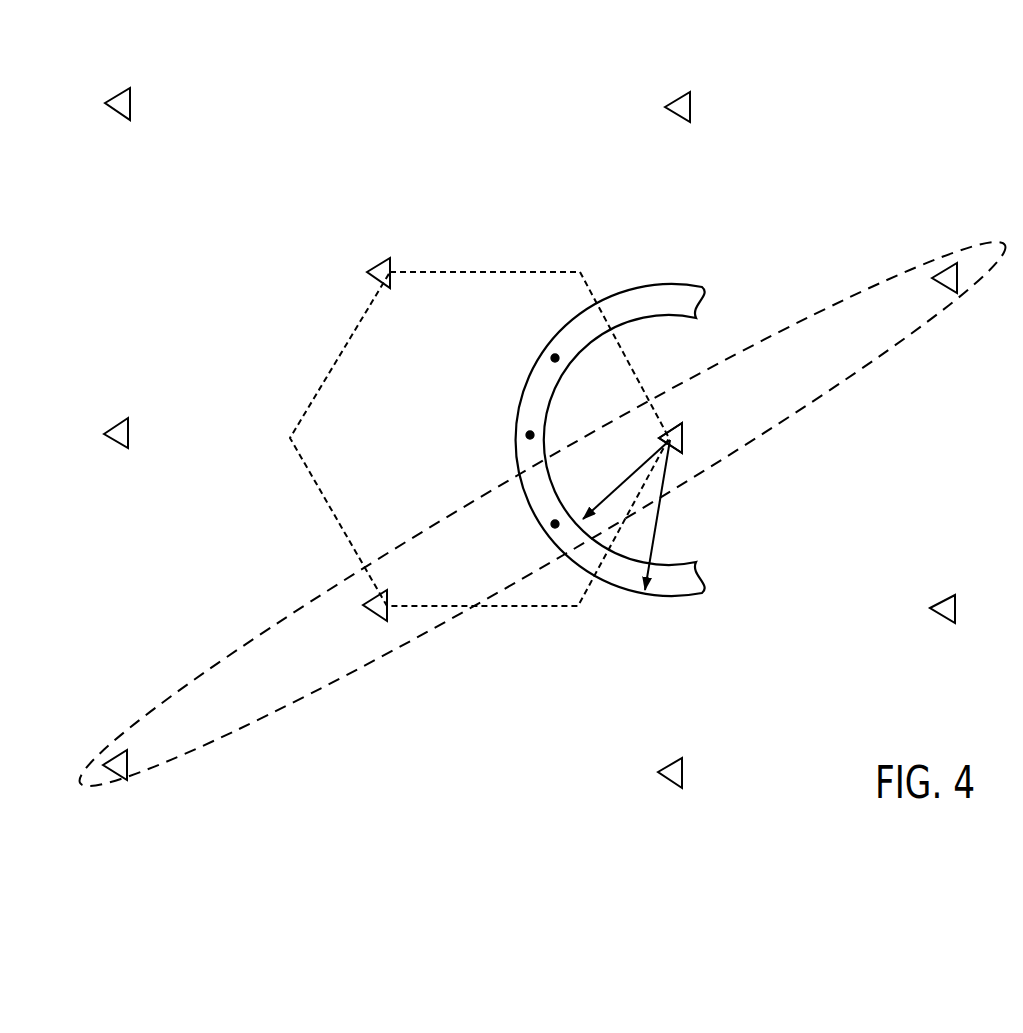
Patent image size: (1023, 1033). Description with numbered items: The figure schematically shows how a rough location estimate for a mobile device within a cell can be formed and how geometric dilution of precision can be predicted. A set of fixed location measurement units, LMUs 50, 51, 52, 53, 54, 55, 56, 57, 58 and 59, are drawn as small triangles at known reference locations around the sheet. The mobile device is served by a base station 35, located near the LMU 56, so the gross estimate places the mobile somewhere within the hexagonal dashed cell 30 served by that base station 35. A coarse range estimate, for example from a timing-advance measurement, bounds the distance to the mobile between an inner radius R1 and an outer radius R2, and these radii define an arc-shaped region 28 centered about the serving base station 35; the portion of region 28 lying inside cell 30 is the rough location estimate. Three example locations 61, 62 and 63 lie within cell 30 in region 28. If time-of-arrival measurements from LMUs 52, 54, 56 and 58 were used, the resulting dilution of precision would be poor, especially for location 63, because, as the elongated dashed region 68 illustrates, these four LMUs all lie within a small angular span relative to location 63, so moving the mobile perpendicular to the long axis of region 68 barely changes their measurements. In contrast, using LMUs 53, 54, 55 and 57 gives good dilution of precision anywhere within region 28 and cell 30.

The region 28 is at (661, 284).
The cell 30 is at (546, 273).
The base station 35 is at (670, 438).
The LMU 50 is at (131, 88).
The LMU 51 is at (129, 419).
The LMU 52 is at (128, 752).
The LMU 53 is at (391, 260).
The LMU 54 is at (389, 592).
The LMU 55 is at (666, 105).
The LMU 56 is at (684, 425).
The LMU 57 is at (669, 757).
The LMU 58 is at (953, 265).
The LMU 59 is at (949, 594).
The location 61 is at (552, 357).
The location 62 is at (528, 434).
The location 63 is at (551, 524).
The dashed region 68 is at (245, 645).
The inner radius R1 is at (641, 468).
The outer radius R2 is at (663, 518).